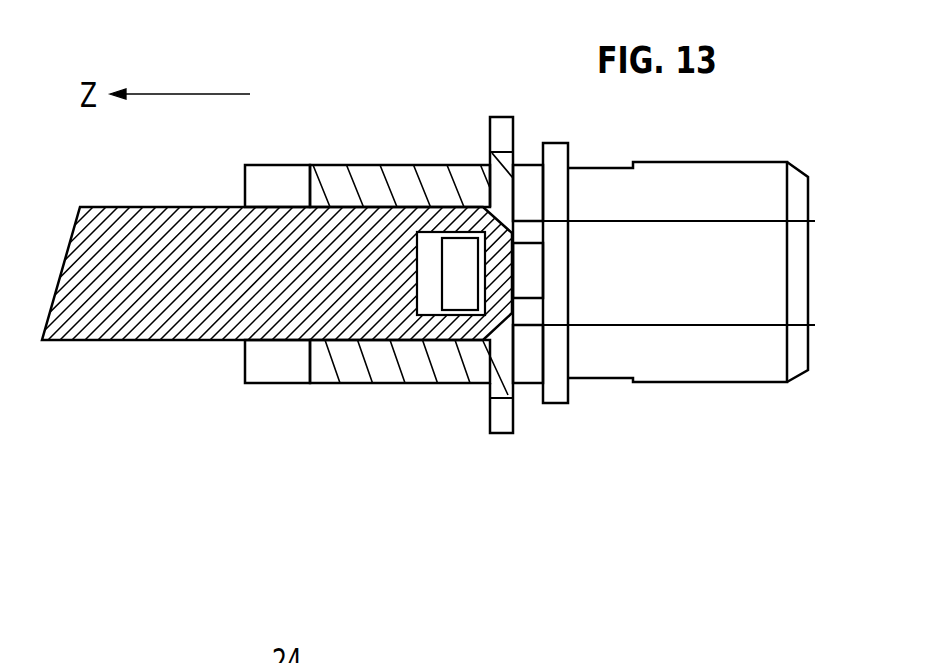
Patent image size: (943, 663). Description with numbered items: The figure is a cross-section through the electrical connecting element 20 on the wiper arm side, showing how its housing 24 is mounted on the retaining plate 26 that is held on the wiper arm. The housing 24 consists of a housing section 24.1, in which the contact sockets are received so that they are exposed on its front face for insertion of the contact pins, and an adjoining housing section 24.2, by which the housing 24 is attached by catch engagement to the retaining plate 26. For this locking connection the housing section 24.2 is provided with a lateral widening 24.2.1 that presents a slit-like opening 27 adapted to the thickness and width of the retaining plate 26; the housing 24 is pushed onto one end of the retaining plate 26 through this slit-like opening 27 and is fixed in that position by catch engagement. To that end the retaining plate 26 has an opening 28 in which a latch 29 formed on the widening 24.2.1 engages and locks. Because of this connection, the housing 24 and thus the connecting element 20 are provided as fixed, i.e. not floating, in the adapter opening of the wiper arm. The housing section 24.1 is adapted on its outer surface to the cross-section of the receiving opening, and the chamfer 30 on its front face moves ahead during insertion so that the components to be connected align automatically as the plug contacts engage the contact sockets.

The connecting element on the wiper arm side 20 is at (606, 401).
The housing 24 is at (343, 242).
The housing section 24.1 is at (664, 303).
The housing section 24.2 is at (244, 304).
The lateral widening 24.2.1 is at (380, 325).
The retaining plate 26 is at (321, 306).
The slit-like opening 27 is at (538, 301).
The opening 28 is at (449, 358).
The latch 29 is at (430, 191).
The chamfer 30 is at (780, 308).